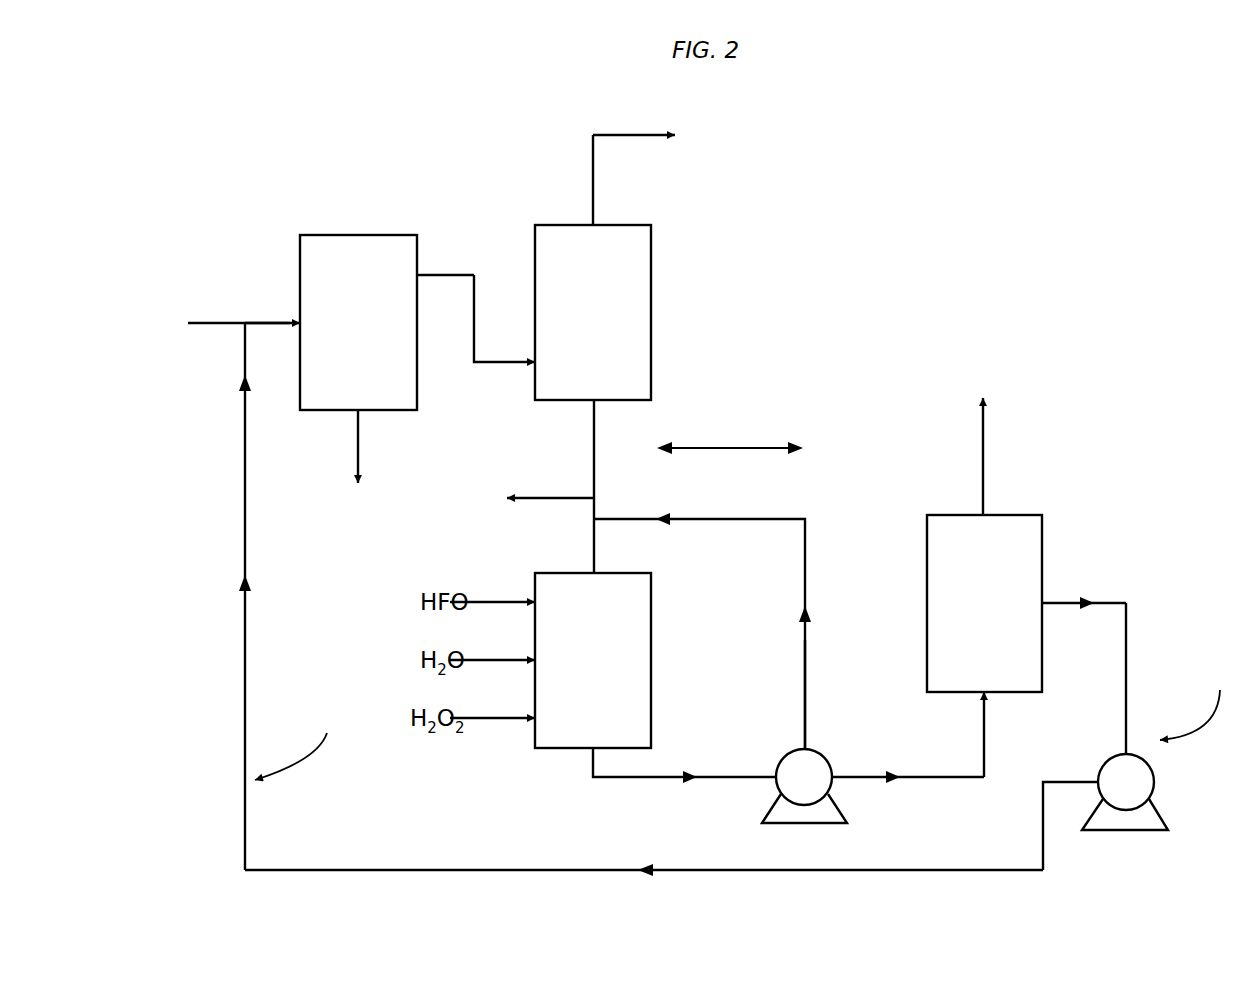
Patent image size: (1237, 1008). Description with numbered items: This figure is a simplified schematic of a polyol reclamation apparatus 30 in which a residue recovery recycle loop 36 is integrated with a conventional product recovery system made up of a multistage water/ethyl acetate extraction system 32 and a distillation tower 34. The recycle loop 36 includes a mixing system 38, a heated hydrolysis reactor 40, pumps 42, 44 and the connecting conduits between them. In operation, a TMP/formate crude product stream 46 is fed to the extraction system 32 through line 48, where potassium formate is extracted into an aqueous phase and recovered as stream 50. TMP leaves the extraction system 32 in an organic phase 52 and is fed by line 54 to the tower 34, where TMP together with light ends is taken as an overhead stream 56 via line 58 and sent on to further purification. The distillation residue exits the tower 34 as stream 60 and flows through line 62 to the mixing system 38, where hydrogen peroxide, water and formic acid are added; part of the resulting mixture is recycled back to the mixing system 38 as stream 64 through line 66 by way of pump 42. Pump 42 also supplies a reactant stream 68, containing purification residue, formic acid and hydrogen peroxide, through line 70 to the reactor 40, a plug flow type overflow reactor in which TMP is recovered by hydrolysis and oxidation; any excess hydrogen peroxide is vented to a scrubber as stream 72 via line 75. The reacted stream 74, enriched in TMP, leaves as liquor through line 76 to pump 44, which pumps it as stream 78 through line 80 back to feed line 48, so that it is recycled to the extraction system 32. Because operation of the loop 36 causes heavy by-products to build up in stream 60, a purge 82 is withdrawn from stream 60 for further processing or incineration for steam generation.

The apparatus 30 is at (437, 145).
The multistage water/ethyl acetate extraction system 32 is at (372, 338).
The distillation tower 34 is at (607, 328).
The residue recovery recycle loop 36 is at (746, 607).
The mixing system 38 is at (607, 674).
The heated hydrolysis reactor 40 is at (997, 617).
The pump 42 is at (818, 790).
The pump 44 is at (1140, 795).
The TMP/formate crude product stream 46 is at (213, 320).
The line 48 is at (262, 326).
The stream 50 is at (360, 445).
The organic phase 52 is at (448, 272).
The line 54 is at (478, 313).
The overhead stream 56 is at (590, 154).
The line 58 is at (596, 207).
The stream 60 is at (597, 438).
The line 62 is at (591, 544).
The stream 64 is at (738, 516).
The line 66 is at (802, 673).
The reactant stream 68 is at (982, 742).
The line 70 is at (933, 780).
The stream 72 is at (987, 440).
The reacted stream 74 is at (1063, 599).
The line 75 is at (987, 482).
The line 76 is at (1129, 679).
The stream 78 is at (249, 461).
The line 80 is at (520, 867).
The purge 82 is at (549, 495).